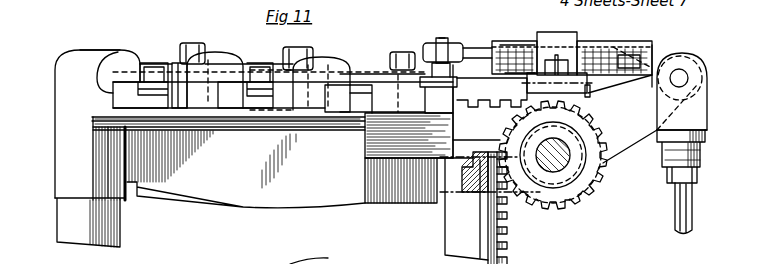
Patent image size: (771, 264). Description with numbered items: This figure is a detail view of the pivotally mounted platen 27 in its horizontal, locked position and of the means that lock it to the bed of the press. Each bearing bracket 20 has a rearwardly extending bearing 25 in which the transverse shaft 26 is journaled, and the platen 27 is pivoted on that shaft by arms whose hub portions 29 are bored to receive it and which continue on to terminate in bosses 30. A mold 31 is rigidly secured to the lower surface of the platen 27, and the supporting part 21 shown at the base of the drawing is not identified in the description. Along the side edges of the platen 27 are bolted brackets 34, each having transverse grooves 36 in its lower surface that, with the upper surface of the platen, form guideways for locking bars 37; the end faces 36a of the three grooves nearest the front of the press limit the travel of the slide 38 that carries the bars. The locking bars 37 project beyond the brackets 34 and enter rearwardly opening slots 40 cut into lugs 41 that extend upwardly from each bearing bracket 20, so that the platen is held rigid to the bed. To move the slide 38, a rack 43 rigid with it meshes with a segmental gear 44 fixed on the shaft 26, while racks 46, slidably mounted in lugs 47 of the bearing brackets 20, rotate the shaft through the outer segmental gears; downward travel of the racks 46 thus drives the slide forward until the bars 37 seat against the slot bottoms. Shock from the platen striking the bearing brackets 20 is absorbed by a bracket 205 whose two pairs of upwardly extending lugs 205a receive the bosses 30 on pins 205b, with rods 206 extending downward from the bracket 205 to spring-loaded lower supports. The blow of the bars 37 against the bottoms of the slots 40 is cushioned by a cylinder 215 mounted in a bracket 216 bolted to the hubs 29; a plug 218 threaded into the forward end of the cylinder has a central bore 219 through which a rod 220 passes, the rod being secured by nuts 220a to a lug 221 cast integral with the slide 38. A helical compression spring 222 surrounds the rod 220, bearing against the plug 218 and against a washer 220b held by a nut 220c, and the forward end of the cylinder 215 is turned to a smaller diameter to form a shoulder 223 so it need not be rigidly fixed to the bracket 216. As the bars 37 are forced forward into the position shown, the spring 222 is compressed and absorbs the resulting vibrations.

The bearing bracket 20 is at (55, 122).
The support block 21 is at (110, 232).
The bearing 25 is at (598, 188).
The transverse shaft 26 is at (555, 162).
The platen 27 is at (381, 113).
The hub portion 29 is at (575, 190).
The boss 30 is at (708, 76).
The mold 31 is at (382, 206).
The bracket 34 is at (178, 62).
The groove 36 is at (152, 72).
The end face 36a is at (268, 41).
The locking bar 37 is at (113, 97).
The slide 38 is at (386, 120).
The slot 40 is at (115, 62).
The lug 41 is at (84, 62).
The rack 43 is at (492, 92).
The segmental gear 44 is at (587, 100).
The rack 46 is at (507, 237).
The lug 47 is at (468, 177).
The bracket 205 is at (702, 152).
The upwardly extending lug 205a is at (700, 112).
The pin 205b is at (682, 75).
The rod 206 is at (694, 209).
The cylinder 215 is at (553, 36).
The bracket 216 is at (576, 36).
The plug 218 is at (492, 41).
The central bore 219 is at (505, 42).
The rod 220 is at (460, 43).
The nut 220a is at (443, 37).
The washer 220b is at (630, 46).
The nut 220c is at (620, 55).
The lug 221 is at (439, 38).
The helical compression spring 222 is at (636, 34).
The shoulder 223 is at (597, 36).